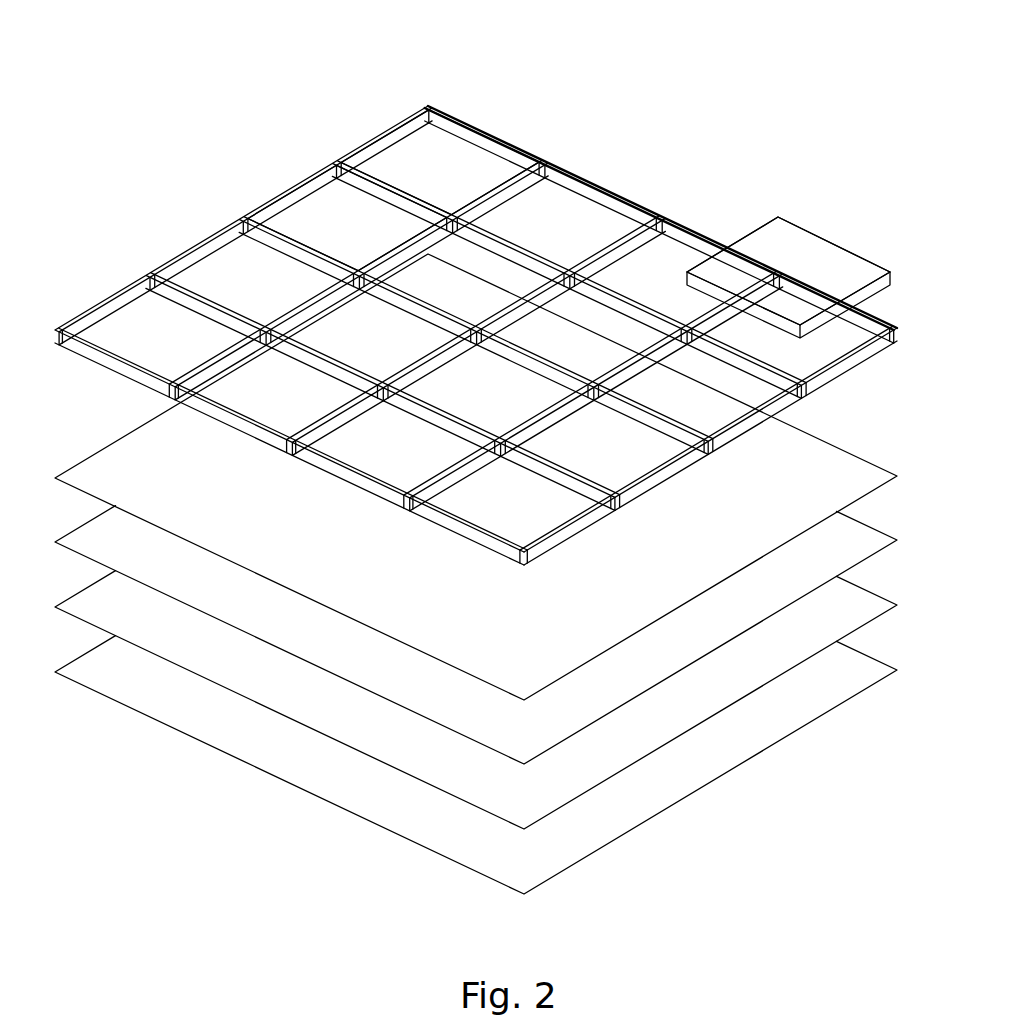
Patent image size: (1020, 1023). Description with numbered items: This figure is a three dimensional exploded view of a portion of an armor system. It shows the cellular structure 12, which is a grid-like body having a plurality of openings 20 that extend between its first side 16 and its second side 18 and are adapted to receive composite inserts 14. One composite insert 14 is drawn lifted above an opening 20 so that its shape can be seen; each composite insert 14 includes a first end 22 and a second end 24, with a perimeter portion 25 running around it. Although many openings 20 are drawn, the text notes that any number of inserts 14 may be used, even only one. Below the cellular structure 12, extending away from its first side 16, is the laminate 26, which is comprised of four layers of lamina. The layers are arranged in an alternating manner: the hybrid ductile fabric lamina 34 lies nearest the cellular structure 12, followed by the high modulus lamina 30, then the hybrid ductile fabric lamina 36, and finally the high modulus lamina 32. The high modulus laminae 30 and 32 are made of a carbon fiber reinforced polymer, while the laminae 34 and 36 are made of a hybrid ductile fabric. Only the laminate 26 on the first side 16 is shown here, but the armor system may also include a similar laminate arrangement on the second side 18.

The cellular structure 12 is at (95, 303).
The composite insert 14 is at (318, 205).
The first side 16 is at (827, 382).
The second side 18 is at (494, 137).
The opening 20 is at (385, 147).
The first end 22 is at (790, 253).
The second end 24 is at (827, 322).
The perimeter portion 25 is at (800, 224).
The laminate 26 is at (505, 574).
The high modulus lamina 30 is at (70, 534).
The high modulus lamina 32 is at (70, 664).
The hybrid ductile fabric lamina 34 is at (92, 455).
The hybrid ductile fabric lamina 36 is at (70, 599).